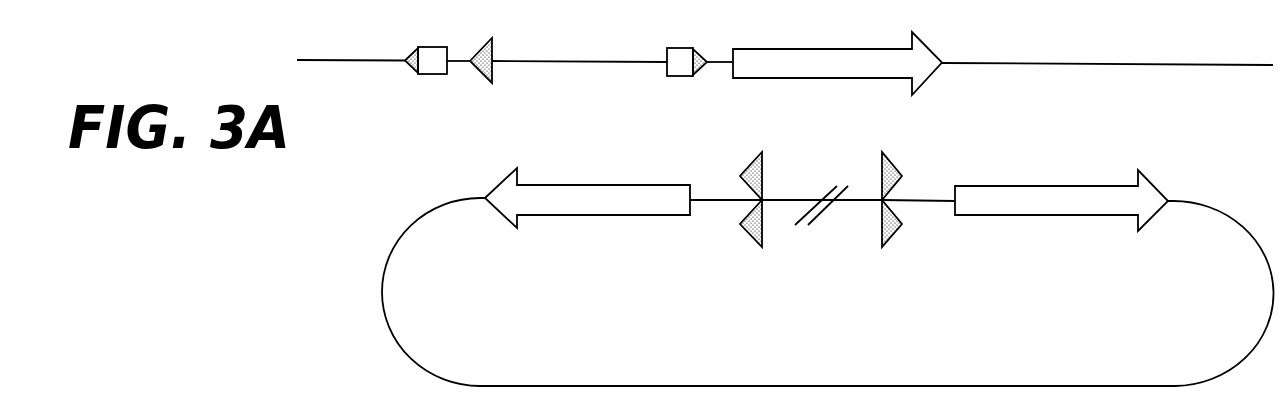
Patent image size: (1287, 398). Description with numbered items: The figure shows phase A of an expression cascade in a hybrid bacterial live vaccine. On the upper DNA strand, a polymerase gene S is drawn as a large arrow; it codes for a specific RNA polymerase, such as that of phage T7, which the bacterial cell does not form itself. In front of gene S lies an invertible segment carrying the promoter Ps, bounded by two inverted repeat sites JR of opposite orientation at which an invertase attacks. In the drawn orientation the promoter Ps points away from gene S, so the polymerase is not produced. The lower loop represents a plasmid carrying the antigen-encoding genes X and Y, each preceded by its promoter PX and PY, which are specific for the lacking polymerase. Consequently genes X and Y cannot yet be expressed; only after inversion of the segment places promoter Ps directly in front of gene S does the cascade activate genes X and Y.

The inverted repeat JR is at (556, 38).
The promoter Ps PS is at (489, 41).
The polymerase gene S is at (837, 47).
The antigen-encoding gene X is at (587, 168).
The promoter PX is at (753, 177).
The promoter PY is at (887, 177).
The antigen-encoding gene Y is at (1061, 171).